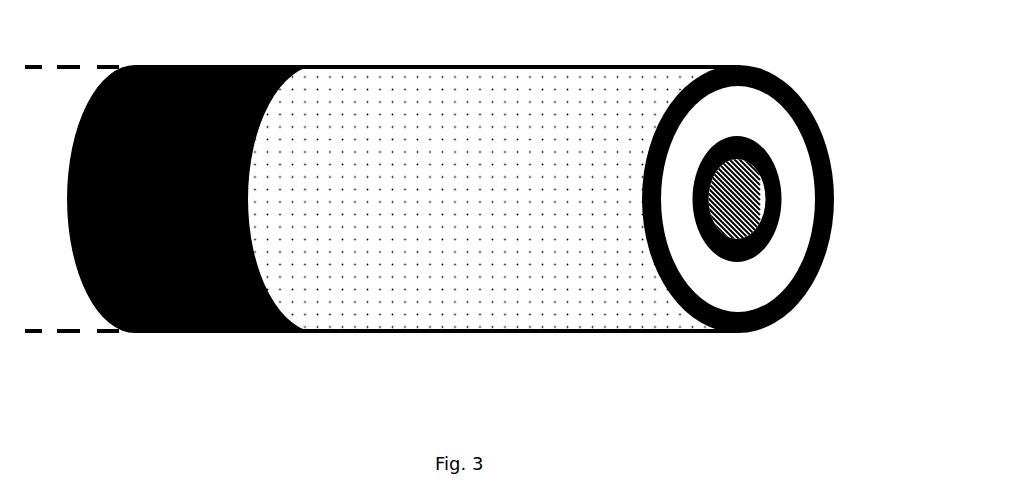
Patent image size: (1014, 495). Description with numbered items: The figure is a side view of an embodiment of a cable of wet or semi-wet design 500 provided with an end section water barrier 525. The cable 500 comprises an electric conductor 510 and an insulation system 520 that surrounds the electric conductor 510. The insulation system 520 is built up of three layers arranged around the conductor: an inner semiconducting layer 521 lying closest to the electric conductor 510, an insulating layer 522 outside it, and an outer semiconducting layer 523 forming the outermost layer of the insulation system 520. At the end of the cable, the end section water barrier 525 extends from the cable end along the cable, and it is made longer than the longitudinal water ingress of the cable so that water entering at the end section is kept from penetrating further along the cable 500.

The cable of wet or semi-wet design 500 is at (481, 214).
The electric conductor 510 is at (758, 216).
The insulation system 520 is at (790, 188).
The inner semiconducting layer 521 is at (790, 199).
The insulating layer 522 is at (787, 134).
The outer semiconducting layer 523 is at (793, 80).
The end section water barrier 525 is at (429, 341).